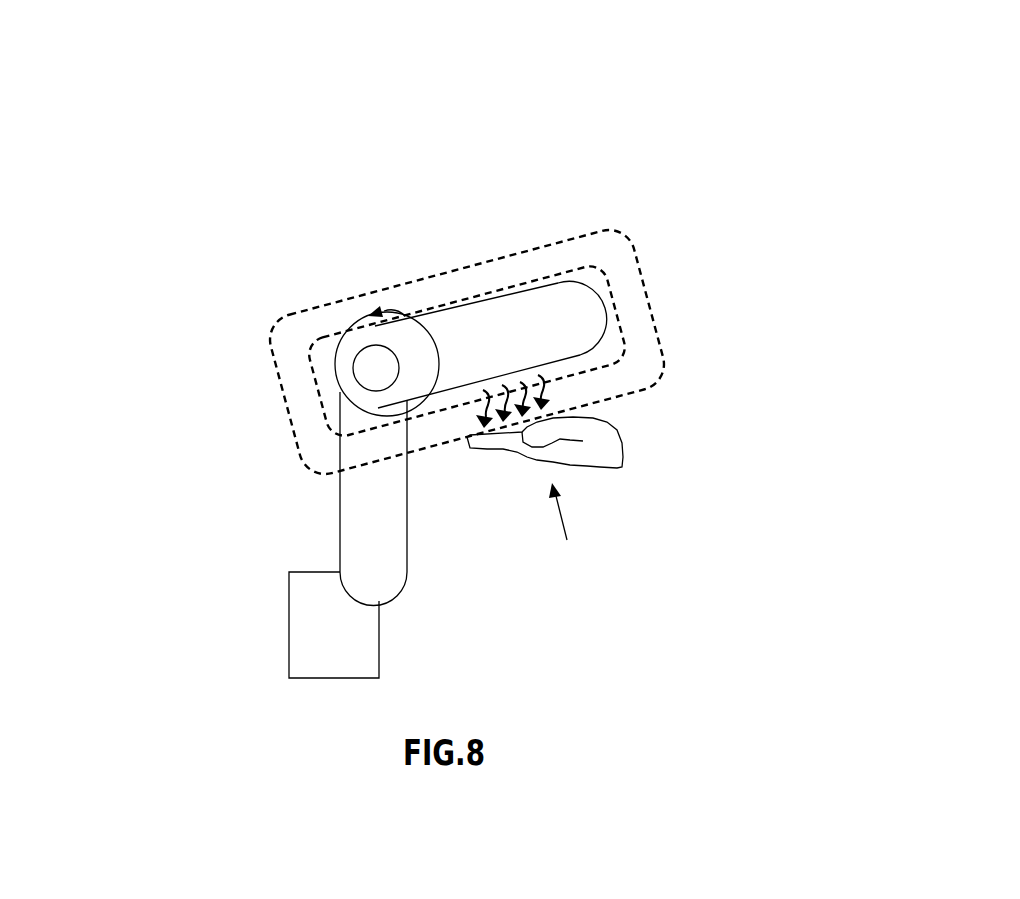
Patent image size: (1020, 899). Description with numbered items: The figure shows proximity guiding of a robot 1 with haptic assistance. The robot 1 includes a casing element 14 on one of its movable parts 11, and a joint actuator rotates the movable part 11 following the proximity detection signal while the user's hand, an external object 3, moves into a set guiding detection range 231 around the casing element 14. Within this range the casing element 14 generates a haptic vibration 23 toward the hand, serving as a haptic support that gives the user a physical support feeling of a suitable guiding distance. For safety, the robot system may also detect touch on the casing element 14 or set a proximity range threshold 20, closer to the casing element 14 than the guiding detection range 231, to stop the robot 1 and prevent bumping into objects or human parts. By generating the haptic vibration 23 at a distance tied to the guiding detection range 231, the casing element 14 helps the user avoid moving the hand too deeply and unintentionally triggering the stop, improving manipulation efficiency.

The robot 1 is at (280, 478).
The movable part 11 is at (523, 325).
The casing element 14 is at (445, 313).
The proximity range threshold 20 is at (555, 272).
The haptic vibration 23 is at (550, 374).
The guiding detection range 231 is at (587, 236).
The external object 3 is at (626, 452).